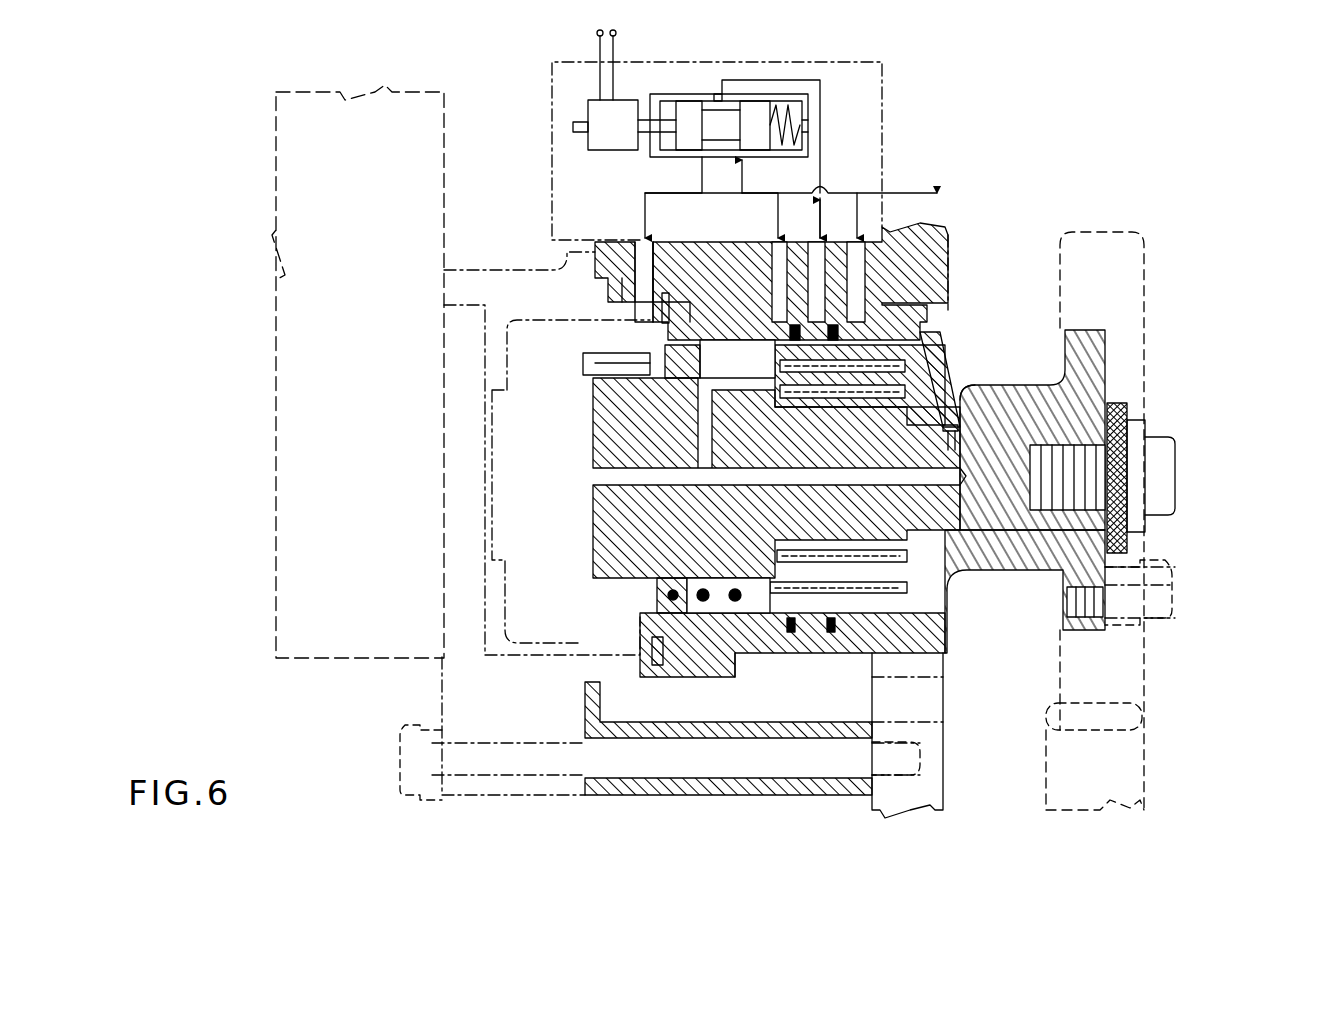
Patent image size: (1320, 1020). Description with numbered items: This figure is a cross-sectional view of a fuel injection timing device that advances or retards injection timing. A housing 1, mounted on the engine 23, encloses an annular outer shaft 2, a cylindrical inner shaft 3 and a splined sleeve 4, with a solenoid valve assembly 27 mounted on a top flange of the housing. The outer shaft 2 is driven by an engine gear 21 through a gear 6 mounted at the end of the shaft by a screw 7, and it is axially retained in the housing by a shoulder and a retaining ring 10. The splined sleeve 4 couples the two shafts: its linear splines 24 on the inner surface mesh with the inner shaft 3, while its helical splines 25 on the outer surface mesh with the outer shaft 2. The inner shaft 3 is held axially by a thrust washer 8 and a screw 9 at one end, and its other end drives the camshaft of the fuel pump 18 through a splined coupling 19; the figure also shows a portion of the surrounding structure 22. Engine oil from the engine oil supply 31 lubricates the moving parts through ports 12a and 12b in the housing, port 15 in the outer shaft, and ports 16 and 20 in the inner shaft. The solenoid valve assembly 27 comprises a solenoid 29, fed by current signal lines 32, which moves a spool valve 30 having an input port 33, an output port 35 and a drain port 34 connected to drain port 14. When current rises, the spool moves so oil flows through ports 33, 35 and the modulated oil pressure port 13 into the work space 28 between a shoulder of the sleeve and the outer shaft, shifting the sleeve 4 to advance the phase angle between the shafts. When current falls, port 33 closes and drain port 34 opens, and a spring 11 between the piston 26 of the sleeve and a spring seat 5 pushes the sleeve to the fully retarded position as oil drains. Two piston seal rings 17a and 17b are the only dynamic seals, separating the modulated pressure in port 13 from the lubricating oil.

The housing 1 is at (665, 670).
The outer shaft 2 is at (1090, 379).
The inner shaft 3 is at (613, 402).
The splined sleeve 4 is at (950, 310).
The spring seat 5 is at (657, 602).
The gear 6 is at (1125, 283).
The screw 7 is at (1176, 603).
The thrust washer 8 is at (1118, 418).
The screw 9 is at (1163, 487).
The retaining ring 10 is at (662, 310).
The spring 11 is at (703, 640).
The port 12a is at (775, 262).
The port 12b is at (855, 283).
The modulated oil pressure port 13 is at (820, 258).
The drain port 14 is at (641, 236).
The port 15 is at (932, 378).
The port 16 is at (985, 413).
The piston seal ring 17a is at (791, 634).
The piston seal ring 17b is at (831, 634).
The fuel pump 18 is at (378, 658).
The splined coupling 19 is at (585, 638).
The port 20 is at (950, 476).
The engine gear 21 is at (1130, 773).
The housing wall 22 is at (866, 707).
The engine 23 is at (928, 778).
The linear splines 24 is at (823, 557).
The helical splines 25 is at (863, 592).
The piston 26 is at (752, 640).
The solenoid valve assembly 27 is at (863, 76).
The work space 28 is at (722, 262).
The solenoid 29 is at (590, 112).
The spool valve 30 is at (760, 101).
The engine oil supply 31 is at (884, 192).
The current signal lines 32 is at (597, 33).
The input port 33 is at (745, 158).
The drain port 34 is at (700, 160).
The output port 35 is at (716, 95).